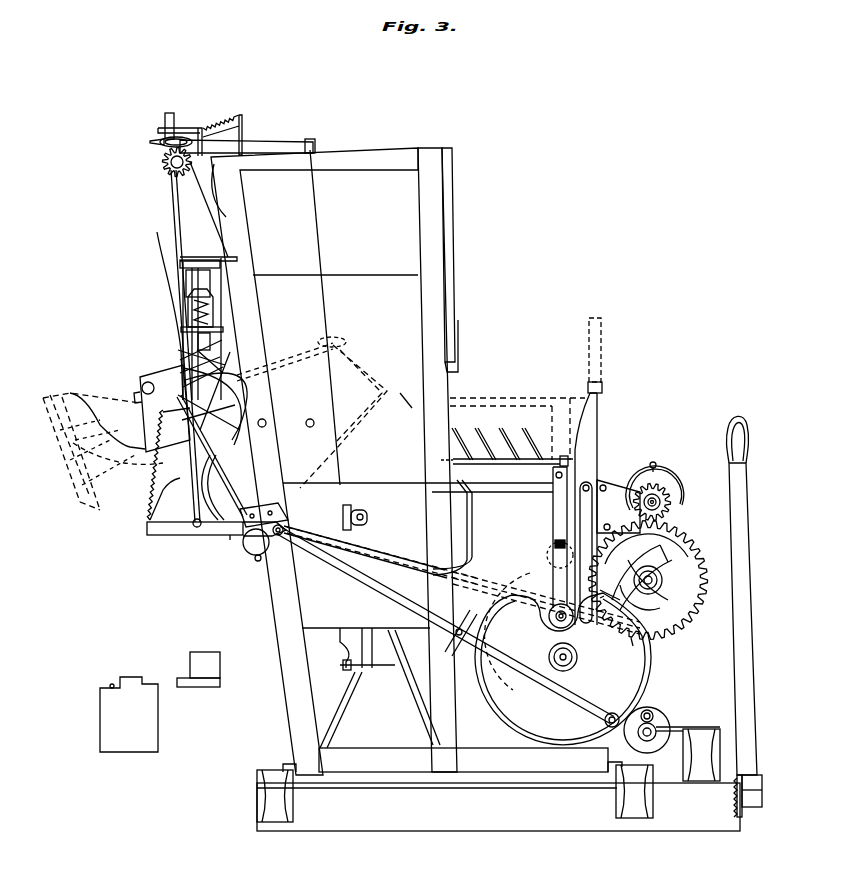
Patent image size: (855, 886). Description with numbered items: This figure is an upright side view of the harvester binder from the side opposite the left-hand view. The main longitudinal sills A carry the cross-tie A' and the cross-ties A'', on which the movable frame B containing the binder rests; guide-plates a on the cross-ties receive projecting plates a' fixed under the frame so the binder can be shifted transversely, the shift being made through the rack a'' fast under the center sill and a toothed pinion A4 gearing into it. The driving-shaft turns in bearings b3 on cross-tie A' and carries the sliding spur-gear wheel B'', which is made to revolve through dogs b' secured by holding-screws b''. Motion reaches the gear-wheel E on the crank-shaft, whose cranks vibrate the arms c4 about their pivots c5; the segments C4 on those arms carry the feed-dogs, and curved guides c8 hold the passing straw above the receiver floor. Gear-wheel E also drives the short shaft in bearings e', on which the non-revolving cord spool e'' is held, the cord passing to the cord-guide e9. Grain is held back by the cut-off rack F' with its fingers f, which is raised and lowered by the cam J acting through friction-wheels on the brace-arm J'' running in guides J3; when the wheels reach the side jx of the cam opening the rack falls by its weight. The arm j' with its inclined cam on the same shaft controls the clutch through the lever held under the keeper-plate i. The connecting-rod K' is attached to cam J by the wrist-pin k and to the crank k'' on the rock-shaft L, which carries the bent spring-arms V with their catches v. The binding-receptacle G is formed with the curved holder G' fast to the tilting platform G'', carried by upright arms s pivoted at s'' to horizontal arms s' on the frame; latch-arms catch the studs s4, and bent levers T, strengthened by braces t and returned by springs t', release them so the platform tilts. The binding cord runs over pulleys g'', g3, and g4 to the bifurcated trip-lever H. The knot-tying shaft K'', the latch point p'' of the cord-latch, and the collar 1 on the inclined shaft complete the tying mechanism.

The movable frame B is at (399, 461).
The bifurcated pivoted trip-lever H is at (351, 648).
The main longitudinal sills A is at (420, 754).
The guide-plates a is at (388, 725).
The projecting plates a' is at (198, 689).
The cross-tie A' is at (275, 796).
The cross-ties A'' is at (634, 791).
The toothed pinion A4 is at (701, 755).
The rack a'' is at (744, 616).
The cam J is at (563, 659).
The wrist-pin k is at (612, 712).
The connecting-rod K' is at (458, 625).
The bent spring-arms V is at (380, 555).
The crank k'' is at (289, 525).
The rock-shaft L is at (264, 541).
The projecting stud s4 is at (264, 514).
The pulley g4 is at (348, 517).
The tilting platform G'' is at (179, 532).
The binding-receptacle G is at (213, 487).
The curved holder G' is at (212, 420).
The upright arms s is at (168, 464).
The braces t is at (212, 456).
The spiral springs t' is at (103, 451).
The horizontal arms s' is at (216, 406).
The pivot s'' is at (201, 385).
The latch point of cord-latch p'' is at (162, 408).
The upright bent levers T is at (283, 360).
The knot-tying shaft K'' is at (194, 312).
The crank or collar 1 is at (151, 145).
The pulley g'' is at (195, 142).
The pulley g3 is at (254, 135).
The curved guides c8 is at (513, 467).
The fingers f is at (442, 461).
The vibrating arms c4 is at (475, 443).
The pivot of vibrating arms c5 is at (523, 444).
The catches v is at (456, 527).
The cut-off rack F' is at (517, 426).
The guide F'' is at (588, 471).
The brace-arm J'' is at (560, 547).
The guides J3 is at (608, 544).
The cam arm j' is at (552, 609).
The opposite side of cam opening jx is at (607, 603).
The keeper-plate i is at (633, 646).
The gear-wheel E is at (654, 580).
The feed segments C4 is at (655, 585).
The bearings e' is at (643, 502).
The cord spool e'' is at (662, 488).
The cord-guide e9 is at (654, 457).
The spur-gear wheel B'' is at (650, 727).
The dogs b' is at (653, 720).
The holding-screws b'' is at (653, 739).
The bearings b3 is at (688, 722).